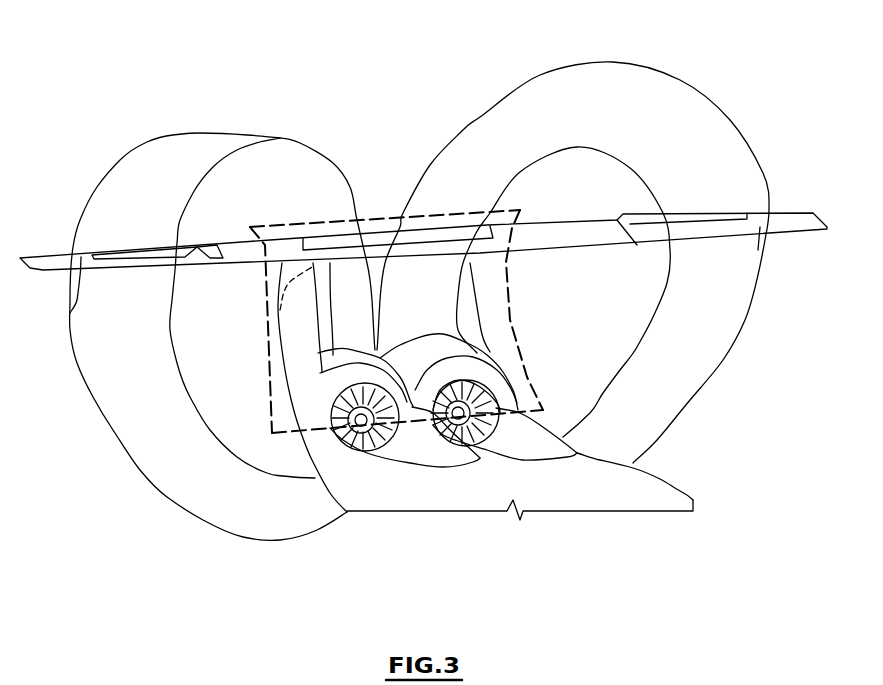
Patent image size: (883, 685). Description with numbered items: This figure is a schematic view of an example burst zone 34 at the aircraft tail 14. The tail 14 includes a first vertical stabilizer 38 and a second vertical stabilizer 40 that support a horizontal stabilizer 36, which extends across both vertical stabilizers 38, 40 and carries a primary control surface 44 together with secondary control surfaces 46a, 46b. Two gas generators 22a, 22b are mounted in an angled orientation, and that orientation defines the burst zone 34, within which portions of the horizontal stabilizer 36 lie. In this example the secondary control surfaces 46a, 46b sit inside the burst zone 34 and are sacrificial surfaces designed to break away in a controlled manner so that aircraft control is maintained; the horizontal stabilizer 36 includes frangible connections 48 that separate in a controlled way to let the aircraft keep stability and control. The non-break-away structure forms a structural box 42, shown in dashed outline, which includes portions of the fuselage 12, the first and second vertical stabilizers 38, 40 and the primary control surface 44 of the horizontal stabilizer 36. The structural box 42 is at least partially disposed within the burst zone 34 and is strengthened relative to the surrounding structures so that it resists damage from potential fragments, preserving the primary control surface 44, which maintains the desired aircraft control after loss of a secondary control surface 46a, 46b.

The fuselage 12 is at (650, 497).
The aircraft tail 14 is at (396, 130).
The gas generator 22a is at (363, 443).
The gas generator 22b is at (520, 437).
The burst zone 34 is at (160, 157).
The horizontal stabilizer 36 is at (550, 233).
The first vertical stabilizer 38 is at (292, 338).
The second vertical stabilizer 40 is at (487, 310).
The structural box 42 is at (523, 357).
The primary control surface 44 is at (377, 247).
The secondary control surface 46a is at (70, 313).
The secondary control surface 46b is at (760, 227).
The frangible connections 48 is at (227, 253).